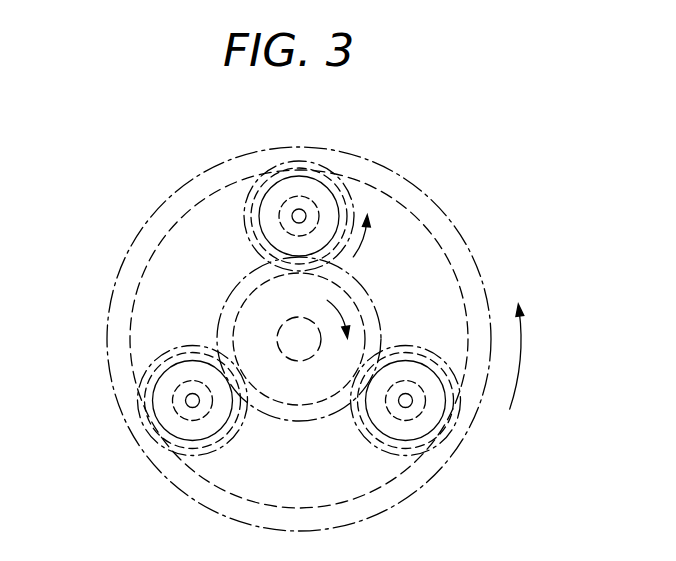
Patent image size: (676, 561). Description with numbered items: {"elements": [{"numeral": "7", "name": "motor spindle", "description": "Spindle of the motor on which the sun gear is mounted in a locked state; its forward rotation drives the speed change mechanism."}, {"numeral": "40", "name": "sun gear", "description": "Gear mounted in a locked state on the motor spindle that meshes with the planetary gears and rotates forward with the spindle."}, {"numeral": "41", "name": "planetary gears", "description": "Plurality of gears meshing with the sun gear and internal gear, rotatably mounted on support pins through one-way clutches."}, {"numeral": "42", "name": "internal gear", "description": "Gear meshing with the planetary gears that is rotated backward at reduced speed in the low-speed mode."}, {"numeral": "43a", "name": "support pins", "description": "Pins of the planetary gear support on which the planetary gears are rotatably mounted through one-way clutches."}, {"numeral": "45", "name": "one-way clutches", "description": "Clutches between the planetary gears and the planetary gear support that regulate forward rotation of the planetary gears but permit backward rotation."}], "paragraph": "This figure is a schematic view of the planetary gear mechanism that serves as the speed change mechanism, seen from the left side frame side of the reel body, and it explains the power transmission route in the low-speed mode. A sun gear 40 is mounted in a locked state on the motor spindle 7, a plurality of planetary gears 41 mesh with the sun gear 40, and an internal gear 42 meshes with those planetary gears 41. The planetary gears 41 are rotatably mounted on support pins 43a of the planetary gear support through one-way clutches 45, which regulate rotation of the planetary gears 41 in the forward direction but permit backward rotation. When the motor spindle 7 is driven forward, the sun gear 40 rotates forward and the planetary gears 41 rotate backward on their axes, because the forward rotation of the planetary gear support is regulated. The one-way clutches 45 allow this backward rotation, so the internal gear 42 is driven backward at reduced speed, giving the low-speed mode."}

The shaft 7 is at (300, 346).
The sun gear 40 is at (240, 312).
The planetary gear 41 is at (323, 178).
The ring gear 42 is at (455, 272).
The planetary gear shaft 43a is at (298, 212).
The bearing 45 is at (318, 210).